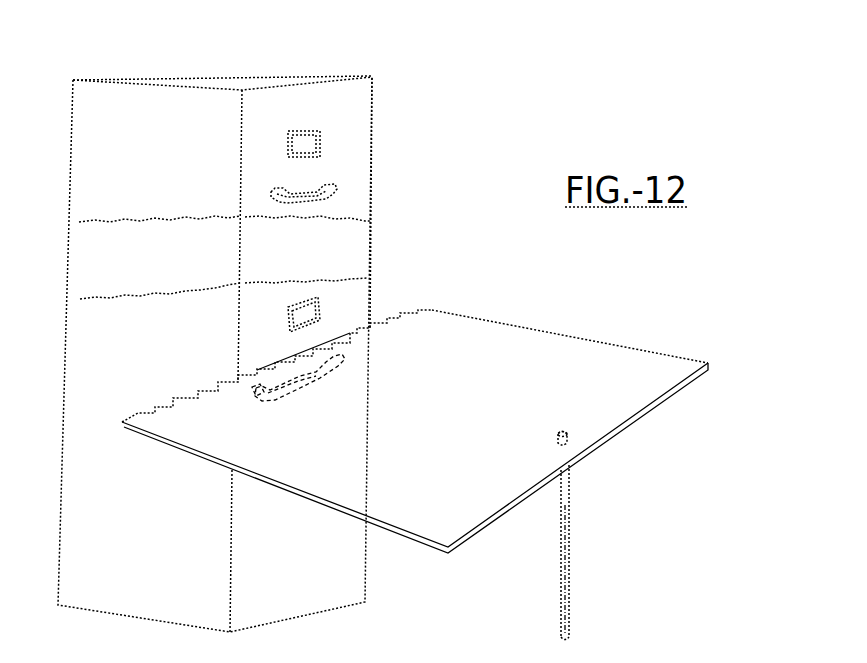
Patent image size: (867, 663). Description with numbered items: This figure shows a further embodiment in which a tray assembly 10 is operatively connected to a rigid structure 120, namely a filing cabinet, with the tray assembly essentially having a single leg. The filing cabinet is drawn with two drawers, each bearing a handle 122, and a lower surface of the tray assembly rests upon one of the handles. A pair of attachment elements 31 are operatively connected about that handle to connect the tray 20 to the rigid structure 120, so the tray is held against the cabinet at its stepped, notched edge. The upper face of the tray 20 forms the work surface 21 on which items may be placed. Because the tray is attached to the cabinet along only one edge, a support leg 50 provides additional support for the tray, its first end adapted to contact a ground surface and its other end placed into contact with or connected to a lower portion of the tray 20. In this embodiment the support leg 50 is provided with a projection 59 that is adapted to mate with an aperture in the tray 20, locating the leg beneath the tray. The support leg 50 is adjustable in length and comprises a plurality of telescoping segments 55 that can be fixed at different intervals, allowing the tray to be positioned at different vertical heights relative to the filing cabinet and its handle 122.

The tray assembly 10 is at (440, 449).
The tray 20 is at (440, 426).
The work surface 21 is at (537, 350).
The attachment elements 31 is at (356, 353).
The support leg 50 is at (605, 552).
The telescoping segments 55 is at (566, 575).
The projection 59 is at (568, 437).
The rigid structure 120 is at (178, 58).
The handle 122 is at (307, 202).